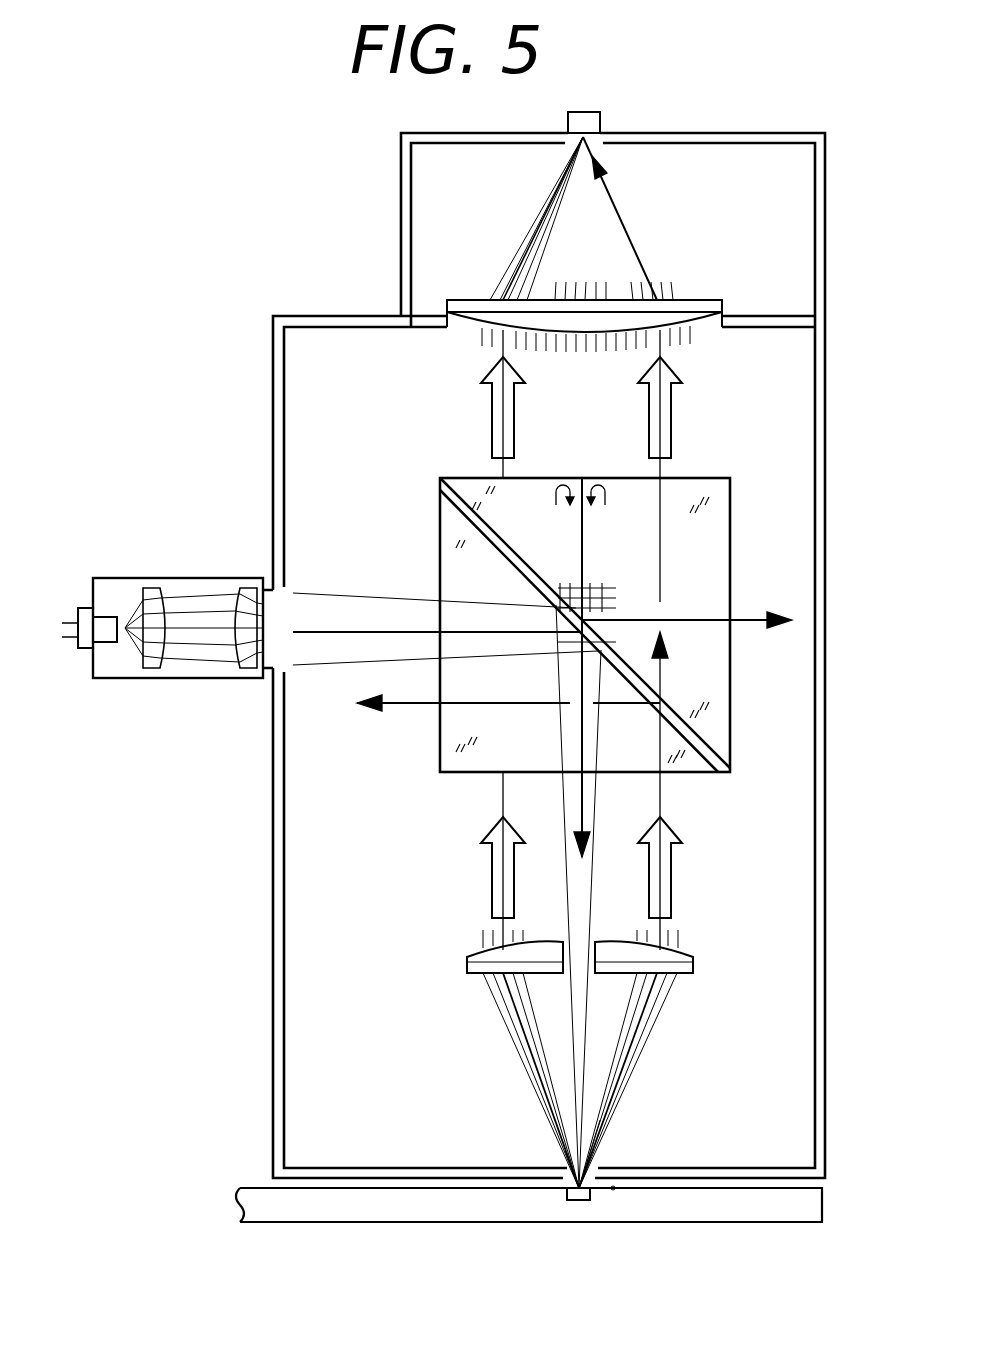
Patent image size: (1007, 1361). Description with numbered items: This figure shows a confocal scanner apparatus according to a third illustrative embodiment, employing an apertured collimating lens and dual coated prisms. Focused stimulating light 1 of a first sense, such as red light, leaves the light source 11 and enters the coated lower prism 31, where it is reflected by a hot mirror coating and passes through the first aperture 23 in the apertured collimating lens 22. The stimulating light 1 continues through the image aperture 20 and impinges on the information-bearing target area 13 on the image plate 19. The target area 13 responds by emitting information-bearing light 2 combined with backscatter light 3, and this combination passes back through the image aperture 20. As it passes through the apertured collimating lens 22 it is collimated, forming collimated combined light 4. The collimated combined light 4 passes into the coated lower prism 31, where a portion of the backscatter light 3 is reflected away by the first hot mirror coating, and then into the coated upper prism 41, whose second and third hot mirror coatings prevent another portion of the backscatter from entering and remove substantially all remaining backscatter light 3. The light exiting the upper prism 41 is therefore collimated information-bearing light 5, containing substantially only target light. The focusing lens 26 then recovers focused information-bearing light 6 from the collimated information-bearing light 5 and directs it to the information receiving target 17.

The focused stimulating light 1 is at (345, 628).
The information-bearing light 2 is at (595, 1155).
The backscatter light 3 is at (745, 619).
The collimated combined light 4 is at (488, 875).
The collimated information-bearing light 5 is at (515, 415).
The focused information-bearing light 6 is at (622, 206).
The light source 11 is at (185, 682).
The information-bearing target area 13 is at (578, 1200).
The information receiving target 17 is at (583, 110).
The image plate 19 is at (452, 1222).
The image aperture 20 is at (552, 1158).
The apertured collimating lens 22 is at (467, 958).
The first aperture 23 is at (598, 983).
The focusing lens 26 is at (700, 300).
The coated lower prism 31 is at (453, 780).
The coated upper prism 41 is at (731, 748).